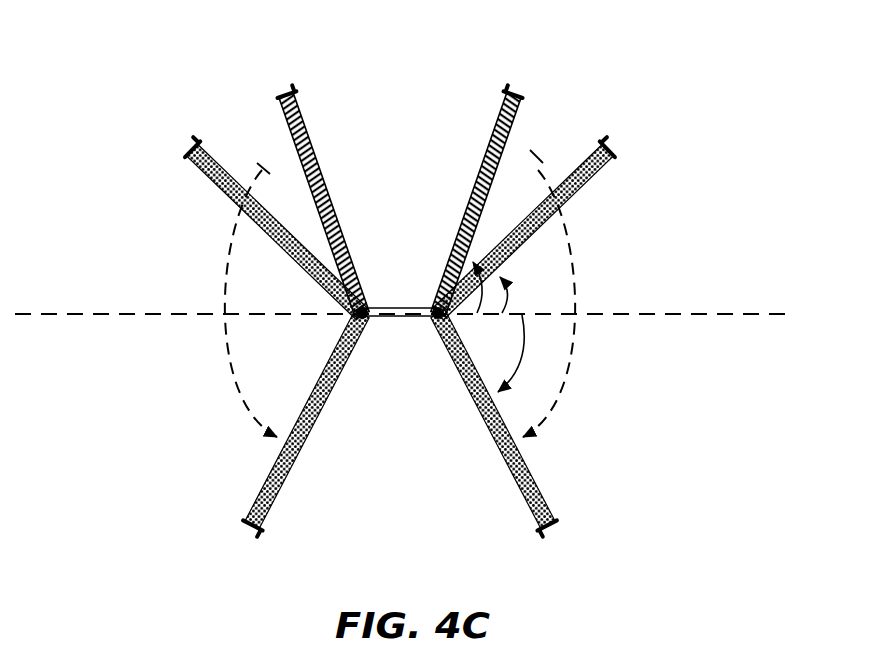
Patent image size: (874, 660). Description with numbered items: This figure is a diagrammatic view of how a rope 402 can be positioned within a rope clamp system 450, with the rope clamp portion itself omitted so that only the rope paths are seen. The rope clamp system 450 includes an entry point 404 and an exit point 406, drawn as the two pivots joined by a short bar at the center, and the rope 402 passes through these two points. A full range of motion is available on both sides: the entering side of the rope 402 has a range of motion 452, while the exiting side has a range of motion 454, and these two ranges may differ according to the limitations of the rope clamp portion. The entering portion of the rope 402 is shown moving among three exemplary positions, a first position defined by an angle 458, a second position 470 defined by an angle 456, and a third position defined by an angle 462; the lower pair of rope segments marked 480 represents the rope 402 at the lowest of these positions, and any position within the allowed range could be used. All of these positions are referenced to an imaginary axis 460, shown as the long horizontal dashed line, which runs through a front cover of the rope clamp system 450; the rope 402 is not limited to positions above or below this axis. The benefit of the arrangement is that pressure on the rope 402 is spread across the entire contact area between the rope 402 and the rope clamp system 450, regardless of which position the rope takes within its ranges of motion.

The rope 402 is at (304, 143).
The entry point 404 is at (367, 306).
The exit point 406 is at (437, 308).
The rope clamp system 450 is at (418, 112).
The range of motion 452 is at (537, 160).
The range of motion 454 is at (266, 165).
The angle 456 is at (506, 292).
The angle 458 is at (481, 296).
The imaginary axis 460 is at (698, 313).
The angle 462 is at (522, 320).
The second position 470 is at (598, 173).
The arms in second position 480 is at (546, 492).